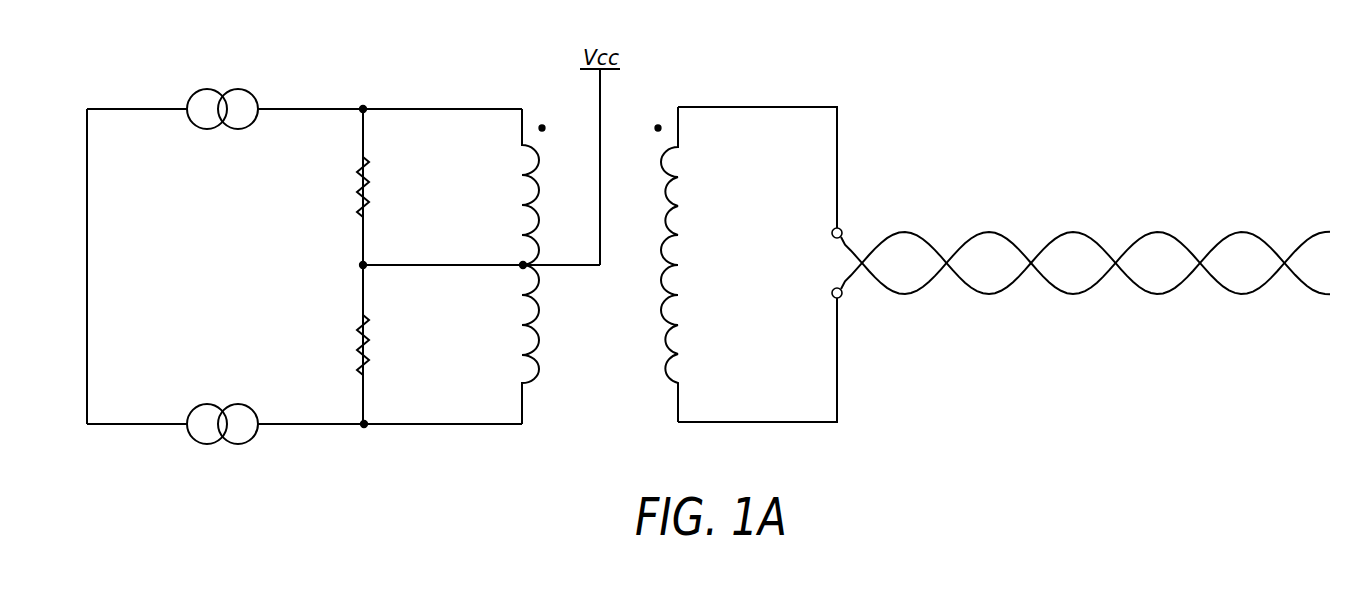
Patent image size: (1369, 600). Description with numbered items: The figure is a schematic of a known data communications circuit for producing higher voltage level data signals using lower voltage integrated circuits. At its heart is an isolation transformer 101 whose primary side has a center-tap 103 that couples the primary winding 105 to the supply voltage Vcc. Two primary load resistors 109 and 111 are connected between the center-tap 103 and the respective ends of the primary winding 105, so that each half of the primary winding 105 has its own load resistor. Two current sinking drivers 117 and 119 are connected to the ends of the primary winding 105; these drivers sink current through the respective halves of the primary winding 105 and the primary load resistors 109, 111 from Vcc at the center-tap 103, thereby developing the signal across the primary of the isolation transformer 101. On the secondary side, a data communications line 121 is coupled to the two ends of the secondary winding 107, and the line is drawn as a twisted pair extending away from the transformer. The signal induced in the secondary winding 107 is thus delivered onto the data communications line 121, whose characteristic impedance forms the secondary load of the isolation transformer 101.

The isolation transformer 101 is at (646, 104).
The center-tap 103 is at (573, 266).
The primary winding 105 is at (540, 380).
The secondary winding 107 is at (668, 383).
The primary load resistor 109 is at (367, 177).
The primary load resistor 111 is at (370, 350).
The current sinking driver 117 is at (243, 88).
The current sinking driver 119 is at (237, 443).
The data communications line 121 is at (1073, 233).